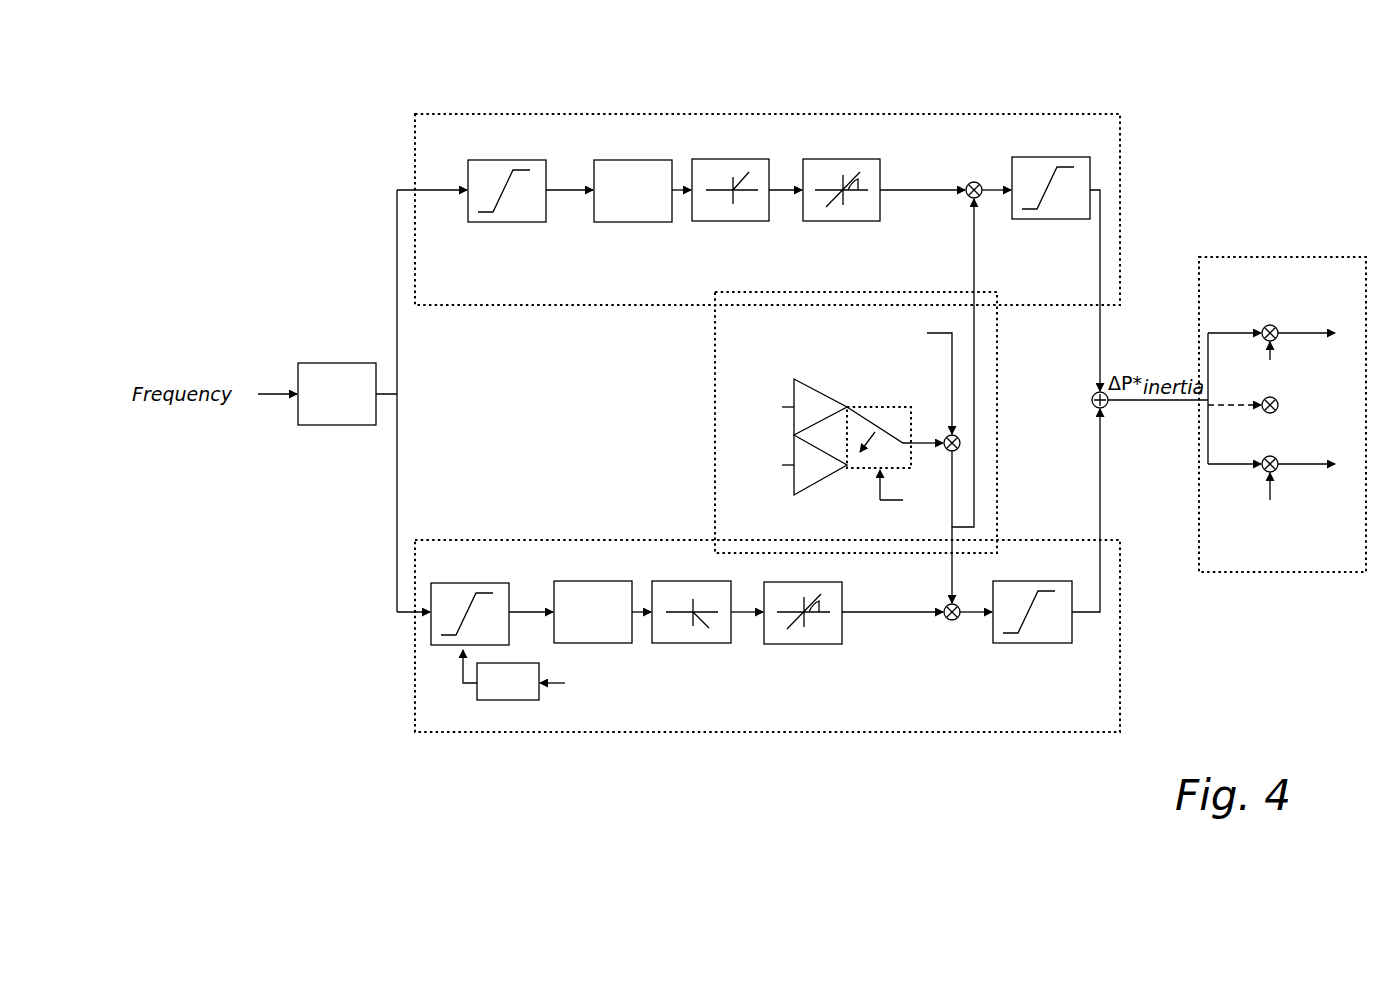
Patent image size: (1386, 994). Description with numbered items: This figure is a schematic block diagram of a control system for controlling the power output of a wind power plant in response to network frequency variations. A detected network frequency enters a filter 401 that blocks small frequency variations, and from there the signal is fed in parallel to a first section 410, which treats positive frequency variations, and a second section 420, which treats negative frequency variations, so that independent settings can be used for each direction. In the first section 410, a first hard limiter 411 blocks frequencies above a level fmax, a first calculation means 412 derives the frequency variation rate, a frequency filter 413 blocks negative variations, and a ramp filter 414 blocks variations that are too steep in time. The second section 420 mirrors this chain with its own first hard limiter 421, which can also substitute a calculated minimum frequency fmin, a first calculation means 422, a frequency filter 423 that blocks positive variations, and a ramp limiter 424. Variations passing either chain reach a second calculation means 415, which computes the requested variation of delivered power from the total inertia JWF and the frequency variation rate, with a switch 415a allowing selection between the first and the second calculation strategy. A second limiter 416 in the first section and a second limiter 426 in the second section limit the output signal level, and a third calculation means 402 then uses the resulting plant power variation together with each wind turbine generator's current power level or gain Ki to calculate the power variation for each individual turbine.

The filter 401 is at (340, 363).
The third calculation means 402 is at (1272, 265).
The first section 410 is at (1114, 160).
The first hard limiter 411 is at (483, 162).
The first calculation means 412 is at (630, 222).
The frequency filter 413 is at (725, 221).
The ramp filter 414 is at (840, 221).
The second calculation means 415 is at (983, 360).
The switch 415a is at (873, 405).
The second limiter 416 is at (1042, 157).
The second section 420 is at (800, 716).
The first hard limiter 421 is at (440, 646).
The first calculation means 422 is at (615, 643).
The frequency filter 423 is at (700, 643).
The ramp limiter 424 is at (820, 644).
The second limiter 426 is at (1035, 643).